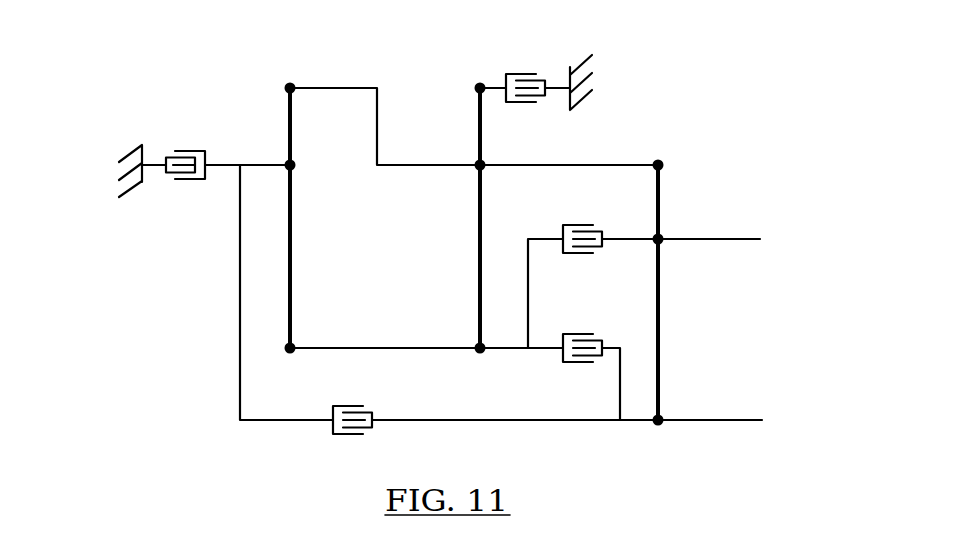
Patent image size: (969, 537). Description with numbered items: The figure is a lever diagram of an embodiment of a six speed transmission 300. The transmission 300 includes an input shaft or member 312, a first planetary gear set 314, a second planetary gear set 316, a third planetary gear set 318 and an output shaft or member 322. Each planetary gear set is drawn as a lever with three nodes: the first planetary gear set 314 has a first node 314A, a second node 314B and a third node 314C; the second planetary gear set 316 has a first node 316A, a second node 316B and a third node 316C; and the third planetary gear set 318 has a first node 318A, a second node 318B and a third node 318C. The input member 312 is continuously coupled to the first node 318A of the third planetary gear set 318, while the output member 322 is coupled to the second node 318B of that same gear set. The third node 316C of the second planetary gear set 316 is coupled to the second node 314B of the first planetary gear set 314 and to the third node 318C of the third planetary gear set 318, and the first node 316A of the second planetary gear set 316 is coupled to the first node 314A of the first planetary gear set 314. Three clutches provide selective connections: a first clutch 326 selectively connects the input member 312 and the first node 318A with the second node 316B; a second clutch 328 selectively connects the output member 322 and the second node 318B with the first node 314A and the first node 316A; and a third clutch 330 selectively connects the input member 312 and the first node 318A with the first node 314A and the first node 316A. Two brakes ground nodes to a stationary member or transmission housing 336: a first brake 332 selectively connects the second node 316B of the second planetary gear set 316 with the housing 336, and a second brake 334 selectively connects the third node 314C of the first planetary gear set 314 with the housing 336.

The six speed transmission 300 is at (735, 66).
The input shaft or member 312 is at (747, 423).
The first planetary gear set 314 is at (503, 223).
The first node of first planetary gear set 314A is at (479, 354).
The second node of first planetary gear set 314B is at (486, 162).
The third node of first planetary gear set 314C is at (477, 85).
The second planetary gear set 316 is at (315, 223).
The first node of second planetary gear set 316A is at (289, 354).
The second node of second planetary gear set 316B is at (296, 167).
The third node of second planetary gear set 316C is at (287, 85).
The third planetary gear set 318 is at (675, 307).
The first node of third planetary gear set 318A is at (657, 426).
The second node of third planetary gear set 318B is at (664, 232).
The third node of third planetary gear set 318C is at (660, 160).
The output shaft or member 322 is at (748, 242).
The first clutch 326 is at (338, 438).
The second clutch 328 is at (577, 223).
The third clutch 330 is at (577, 331).
The first brake 332 is at (198, 151).
The second brake 334 is at (523, 72).
The stationary member or transmission housing 336 is at (130, 148).